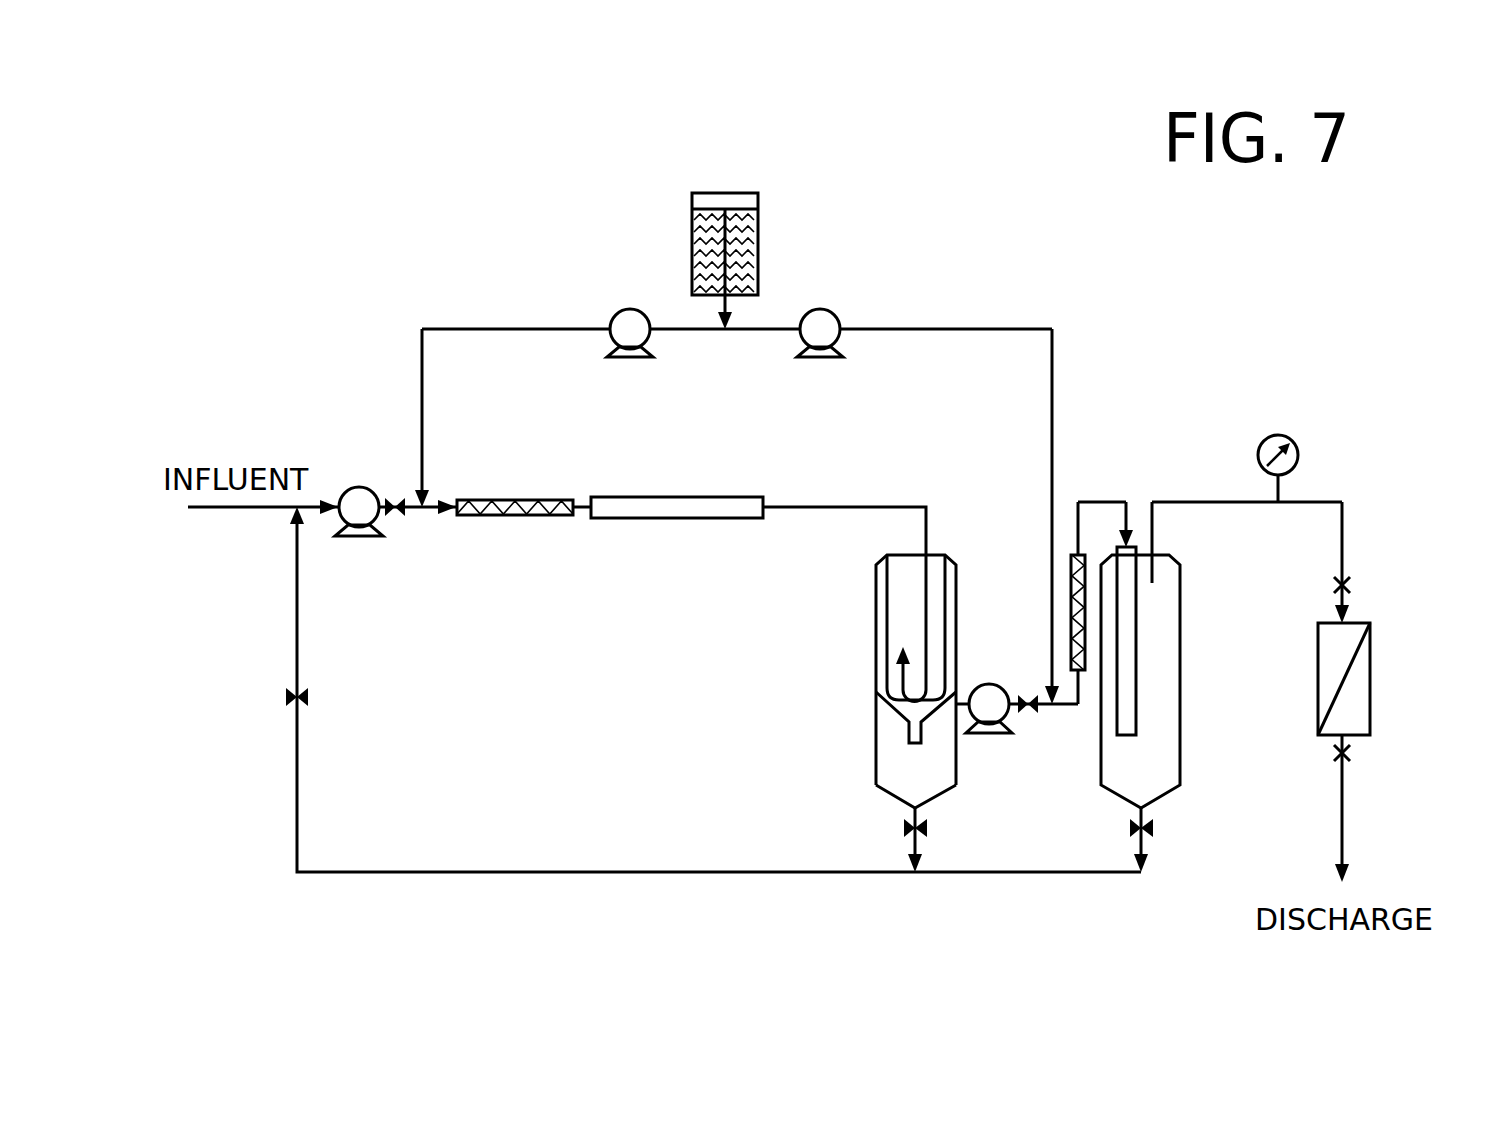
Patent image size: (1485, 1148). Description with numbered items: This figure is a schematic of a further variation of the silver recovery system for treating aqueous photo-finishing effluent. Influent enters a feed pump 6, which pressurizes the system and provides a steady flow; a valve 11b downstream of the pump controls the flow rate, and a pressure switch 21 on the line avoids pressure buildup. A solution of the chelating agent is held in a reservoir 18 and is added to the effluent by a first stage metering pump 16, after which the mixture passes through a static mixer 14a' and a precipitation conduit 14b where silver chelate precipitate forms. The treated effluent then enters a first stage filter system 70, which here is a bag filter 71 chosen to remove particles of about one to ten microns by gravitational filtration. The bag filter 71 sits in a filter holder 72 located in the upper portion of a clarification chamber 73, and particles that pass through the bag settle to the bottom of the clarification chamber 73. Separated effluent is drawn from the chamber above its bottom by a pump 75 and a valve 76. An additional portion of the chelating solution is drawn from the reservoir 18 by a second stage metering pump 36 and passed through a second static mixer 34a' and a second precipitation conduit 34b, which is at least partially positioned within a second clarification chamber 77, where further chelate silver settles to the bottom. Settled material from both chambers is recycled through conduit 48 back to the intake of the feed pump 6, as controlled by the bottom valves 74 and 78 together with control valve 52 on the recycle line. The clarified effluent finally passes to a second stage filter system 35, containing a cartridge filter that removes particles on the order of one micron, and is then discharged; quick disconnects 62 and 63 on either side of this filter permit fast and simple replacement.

The reservoir 18 is at (707, 193).
The first stage metering pump 16 is at (621, 358).
The second stage metering pump 36 is at (821, 358).
The feed pump 6 is at (398, 545).
The valve 11b is at (398, 493).
The static mixer 14a' is at (510, 472).
The precipitation conduit 14b is at (677, 479).
The first stage filter system 70 is at (889, 562).
The bag filter 71 is at (860, 670).
The filter holder 72 is at (907, 728).
The clarification chamber 73 is at (893, 797).
The valve 74 is at (931, 824).
The pump 75 is at (985, 730).
The valve 76 is at (1030, 718).
The static mixer 34a' is at (1114, 507).
The precipitation conduit 34b is at (1185, 565).
The clarification chamber 77 is at (1112, 793).
The valve 78 is at (1152, 824).
The pressure switch 21 is at (1300, 455).
The quick disconnect 62 is at (1348, 583).
The second stage filter system 35 is at (1373, 672).
The quick disconnect 63 is at (1350, 752).
The conduit 48 is at (303, 795).
The control valve 52 is at (312, 696).